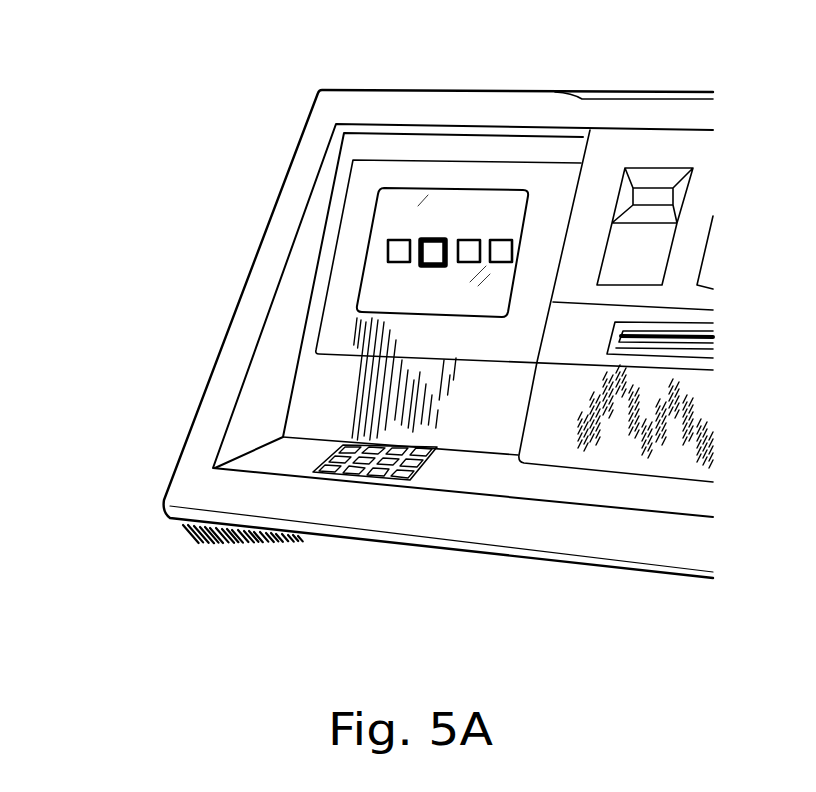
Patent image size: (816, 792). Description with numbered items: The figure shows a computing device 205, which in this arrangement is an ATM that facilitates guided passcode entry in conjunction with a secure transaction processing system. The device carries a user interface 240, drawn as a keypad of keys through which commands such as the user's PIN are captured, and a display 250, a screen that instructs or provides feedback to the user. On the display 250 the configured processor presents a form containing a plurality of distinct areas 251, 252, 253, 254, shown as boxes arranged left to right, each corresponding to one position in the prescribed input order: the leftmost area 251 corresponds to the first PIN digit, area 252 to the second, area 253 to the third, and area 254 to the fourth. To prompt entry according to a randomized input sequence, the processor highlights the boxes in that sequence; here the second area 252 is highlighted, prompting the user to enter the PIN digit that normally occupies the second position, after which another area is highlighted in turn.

The computing device 205 is at (374, 329).
The user interface 240 is at (433, 447).
The display 250 is at (450, 178).
The leftmost area 251 is at (407, 239).
The second area 252 is at (446, 237).
The third area 253 is at (480, 239).
The fourth area 254 is at (512, 239).